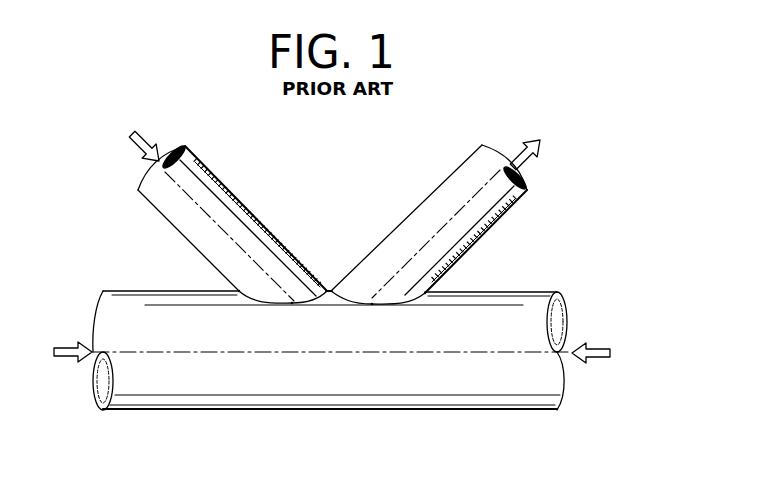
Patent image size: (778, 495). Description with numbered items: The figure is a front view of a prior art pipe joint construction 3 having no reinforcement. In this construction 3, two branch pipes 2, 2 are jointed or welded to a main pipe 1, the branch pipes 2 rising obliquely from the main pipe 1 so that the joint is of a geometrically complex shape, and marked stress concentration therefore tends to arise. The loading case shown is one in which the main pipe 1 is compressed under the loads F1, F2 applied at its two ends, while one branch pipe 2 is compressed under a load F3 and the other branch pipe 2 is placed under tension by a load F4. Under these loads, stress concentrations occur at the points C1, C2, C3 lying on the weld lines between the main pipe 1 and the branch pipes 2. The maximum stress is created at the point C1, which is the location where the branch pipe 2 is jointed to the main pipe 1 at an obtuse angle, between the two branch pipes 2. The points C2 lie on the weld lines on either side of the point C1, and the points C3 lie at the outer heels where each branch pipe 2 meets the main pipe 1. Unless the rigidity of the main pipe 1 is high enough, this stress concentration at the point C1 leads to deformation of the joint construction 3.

The main pipe 1 is at (365, 412).
The branch pipe 2 is at (240, 200).
The pipe joint construction 3 is at (389, 155).
The point C1 is at (328, 284).
The point C2 is at (377, 323).
The point C3 is at (470, 275).
The load F1 is at (62, 357).
The load F2 is at (602, 357).
The load F3 is at (136, 142).
The load F4 is at (534, 145).